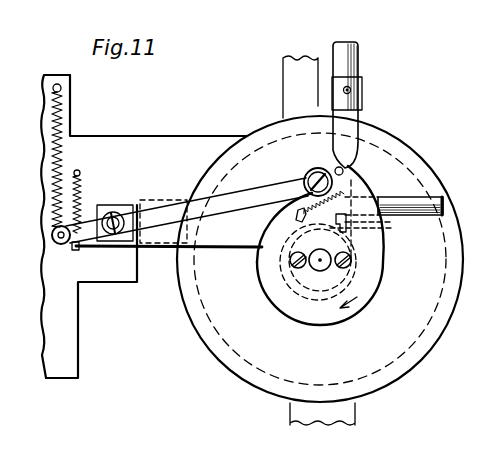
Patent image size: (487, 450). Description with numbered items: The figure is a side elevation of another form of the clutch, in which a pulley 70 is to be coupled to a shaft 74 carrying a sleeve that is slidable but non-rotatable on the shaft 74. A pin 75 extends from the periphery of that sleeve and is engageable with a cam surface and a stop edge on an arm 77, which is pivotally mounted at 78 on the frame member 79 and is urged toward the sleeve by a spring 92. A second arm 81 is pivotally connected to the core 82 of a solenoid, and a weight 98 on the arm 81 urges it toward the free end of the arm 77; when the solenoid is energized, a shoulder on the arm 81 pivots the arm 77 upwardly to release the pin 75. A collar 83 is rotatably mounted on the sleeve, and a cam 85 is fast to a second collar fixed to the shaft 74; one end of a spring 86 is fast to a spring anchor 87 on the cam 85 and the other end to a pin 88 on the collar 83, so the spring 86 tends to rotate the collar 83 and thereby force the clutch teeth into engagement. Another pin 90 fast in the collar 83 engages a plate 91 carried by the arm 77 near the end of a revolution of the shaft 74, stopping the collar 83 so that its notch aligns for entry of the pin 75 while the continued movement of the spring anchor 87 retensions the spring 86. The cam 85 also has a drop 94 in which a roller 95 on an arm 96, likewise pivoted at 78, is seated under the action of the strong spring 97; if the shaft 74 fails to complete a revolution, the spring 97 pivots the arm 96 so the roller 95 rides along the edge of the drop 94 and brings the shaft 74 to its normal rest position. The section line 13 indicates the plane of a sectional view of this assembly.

The section line 13- 13 is at (315, 102).
The pulley 70 is at (411, 359).
The shaft 74 is at (318, 264).
The pin 75 is at (292, 256).
The arm 77 is at (182, 248).
The pivot 78 is at (114, 211).
The frame member 79 is at (66, 326).
The arm 81 is at (398, 203).
The core 82 is at (360, 64).
The collar 83 is at (292, 282).
The cam 85 is at (380, 282).
The spring 86 is at (297, 181).
The spring anchor 87 is at (348, 174).
The pin 88 is at (262, 249).
The pin 90 is at (374, 221).
The plate 91 is at (348, 231).
The spring 92 is at (79, 179).
The drop 94 is at (350, 162).
The roller 95 is at (318, 168).
The arm 96 is at (250, 198).
The spring 97 is at (62, 127).
The weight 98 is at (405, 205).